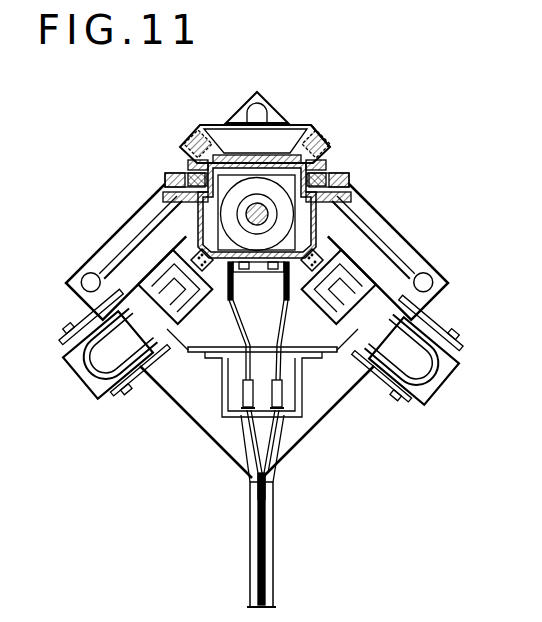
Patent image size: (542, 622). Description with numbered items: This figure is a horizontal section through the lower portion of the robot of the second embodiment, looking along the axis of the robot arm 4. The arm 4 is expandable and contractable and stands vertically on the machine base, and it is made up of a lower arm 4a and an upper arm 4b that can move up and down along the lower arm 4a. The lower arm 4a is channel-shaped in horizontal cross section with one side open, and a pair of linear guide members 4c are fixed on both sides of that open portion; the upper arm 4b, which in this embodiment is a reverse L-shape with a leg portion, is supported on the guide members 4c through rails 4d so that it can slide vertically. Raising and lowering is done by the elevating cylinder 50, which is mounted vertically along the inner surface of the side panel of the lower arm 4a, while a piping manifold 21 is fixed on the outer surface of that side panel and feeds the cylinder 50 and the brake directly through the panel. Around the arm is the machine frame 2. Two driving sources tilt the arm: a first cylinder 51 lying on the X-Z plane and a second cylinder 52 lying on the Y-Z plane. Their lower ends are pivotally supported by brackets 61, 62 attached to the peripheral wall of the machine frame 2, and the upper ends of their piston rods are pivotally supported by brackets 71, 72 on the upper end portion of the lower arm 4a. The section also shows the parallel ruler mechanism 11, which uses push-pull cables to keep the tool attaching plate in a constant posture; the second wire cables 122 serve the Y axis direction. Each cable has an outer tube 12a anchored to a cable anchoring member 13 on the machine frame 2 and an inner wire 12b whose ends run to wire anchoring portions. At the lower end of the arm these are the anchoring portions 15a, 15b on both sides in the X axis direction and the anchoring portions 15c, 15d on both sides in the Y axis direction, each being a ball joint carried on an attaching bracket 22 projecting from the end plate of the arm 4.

The machine frame 2 is at (405, 270).
The robot arm 4 is at (198, 214).
The lower arm 4a is at (360, 212).
The upper arm 4b is at (325, 145).
The linear guide members 4c is at (175, 181).
The rails 4d is at (190, 166).
The elevating cylinder 50 is at (265, 178).
The first cylinder 51 is at (388, 338).
The second cylinder 52 is at (148, 337).
The bracket 61 is at (443, 323).
The bracket 62 is at (85, 325).
The bracket 71 is at (290, 290).
The bracket 72 is at (226, 290).
The parallel ruler mechanism 11 is at (283, 539).
The outer tube 12a is at (251, 503).
The inner wire 12b is at (260, 274).
The second wire cables 122 is at (257, 543).
The cable anchoring member 13 is at (297, 428).
The wire anchoring portion 15a is at (327, 250).
The wire anchoring portion 15b is at (194, 128).
The second wire anchoring portion 15c is at (186, 250).
The second wire anchoring portion 15d is at (320, 128).
The piping manifold 21 is at (272, 280).
The attaching brackets 22 is at (226, 128).